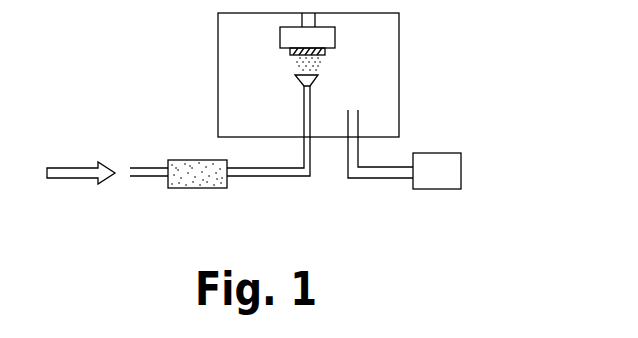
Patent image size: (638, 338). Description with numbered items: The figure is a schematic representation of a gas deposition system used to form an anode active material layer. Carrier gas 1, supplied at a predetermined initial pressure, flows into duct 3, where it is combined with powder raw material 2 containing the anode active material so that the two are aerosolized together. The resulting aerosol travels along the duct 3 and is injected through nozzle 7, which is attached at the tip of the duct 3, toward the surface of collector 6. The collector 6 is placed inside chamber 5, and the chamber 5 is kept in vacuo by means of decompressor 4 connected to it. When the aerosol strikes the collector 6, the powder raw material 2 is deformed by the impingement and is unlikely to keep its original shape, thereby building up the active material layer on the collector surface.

The carrier gas 1 is at (76, 168).
The powder raw material 2 is at (185, 165).
The duct 3 is at (212, 188).
The decompressor 4 is at (438, 189).
The chamber 5 is at (218, 77).
The collector 6 is at (327, 52).
The nozzle 7 is at (318, 78).